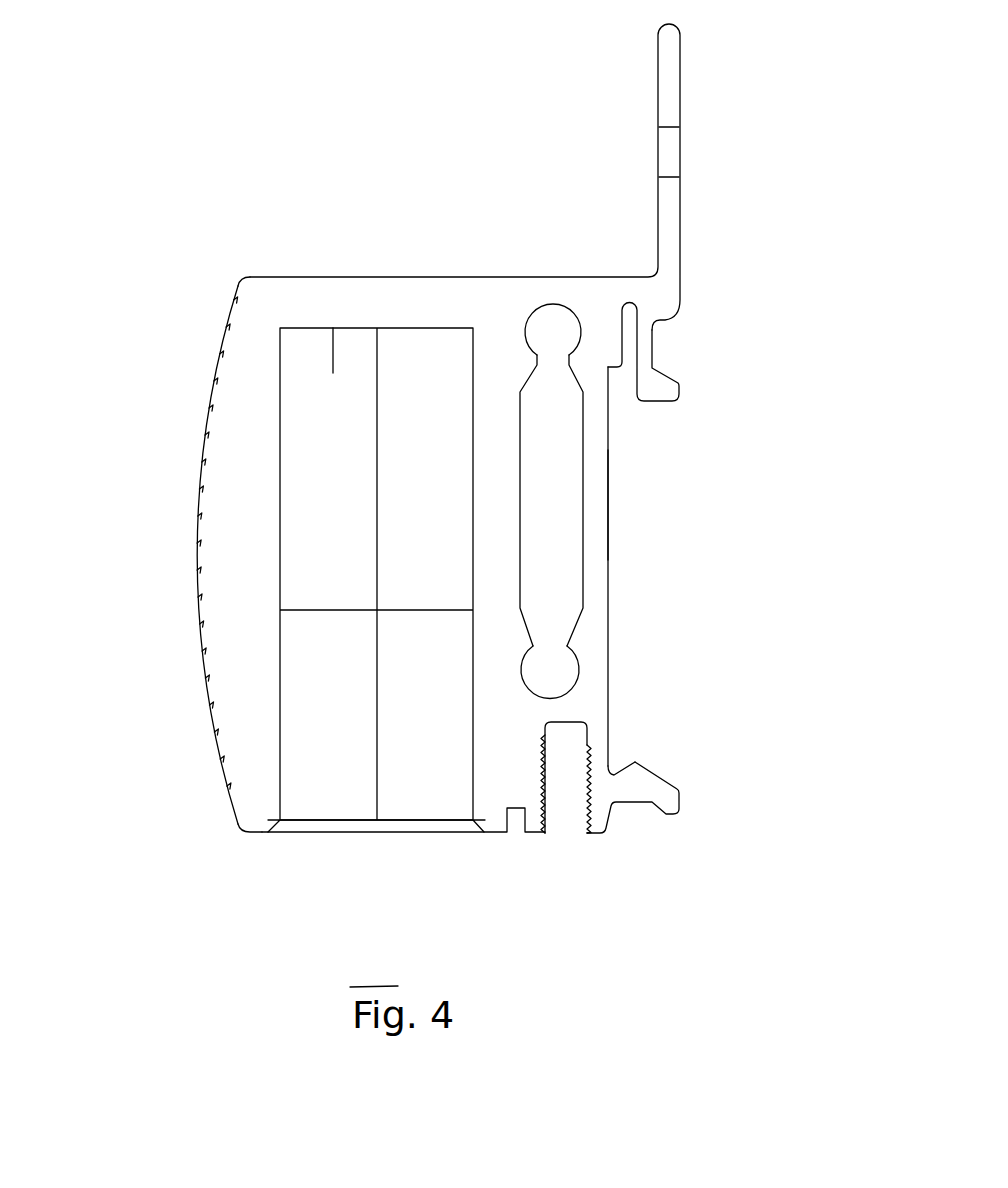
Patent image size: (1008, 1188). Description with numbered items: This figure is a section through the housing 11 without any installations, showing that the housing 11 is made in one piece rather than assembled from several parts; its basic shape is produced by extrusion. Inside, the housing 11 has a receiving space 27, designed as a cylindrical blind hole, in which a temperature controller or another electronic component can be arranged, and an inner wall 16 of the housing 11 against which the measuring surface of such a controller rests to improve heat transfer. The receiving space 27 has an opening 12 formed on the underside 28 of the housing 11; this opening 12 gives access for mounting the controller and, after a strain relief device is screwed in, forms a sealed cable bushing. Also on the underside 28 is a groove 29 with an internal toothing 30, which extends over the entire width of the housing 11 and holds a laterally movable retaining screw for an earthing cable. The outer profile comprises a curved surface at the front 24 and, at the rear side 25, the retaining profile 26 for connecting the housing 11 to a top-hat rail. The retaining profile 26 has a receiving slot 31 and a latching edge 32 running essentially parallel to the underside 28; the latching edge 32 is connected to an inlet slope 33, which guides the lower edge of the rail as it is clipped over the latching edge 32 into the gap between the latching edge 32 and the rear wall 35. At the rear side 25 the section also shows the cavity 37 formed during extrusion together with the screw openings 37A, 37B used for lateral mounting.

The housing 11 is at (359, 482).
The opening 12 is at (425, 820).
The inner wall 16 is at (333, 373).
The front 24 is at (197, 485).
The rear side 25 is at (608, 598).
The retaining profile 26 is at (735, 558).
The receiving space 27 is at (294, 629).
The underside 28 is at (255, 835).
The groove 29 is at (630, 815).
The internal toothing 30 is at (586, 746).
The receiving slot 31 is at (628, 343).
The latching edge 32 is at (614, 772).
The inlet slope 33 is at (663, 780).
The rear wall 35 is at (608, 503).
The cavity 37 is at (647, 416).
The screw opening 37A is at (550, 325).
The screw opening 37B is at (560, 670).